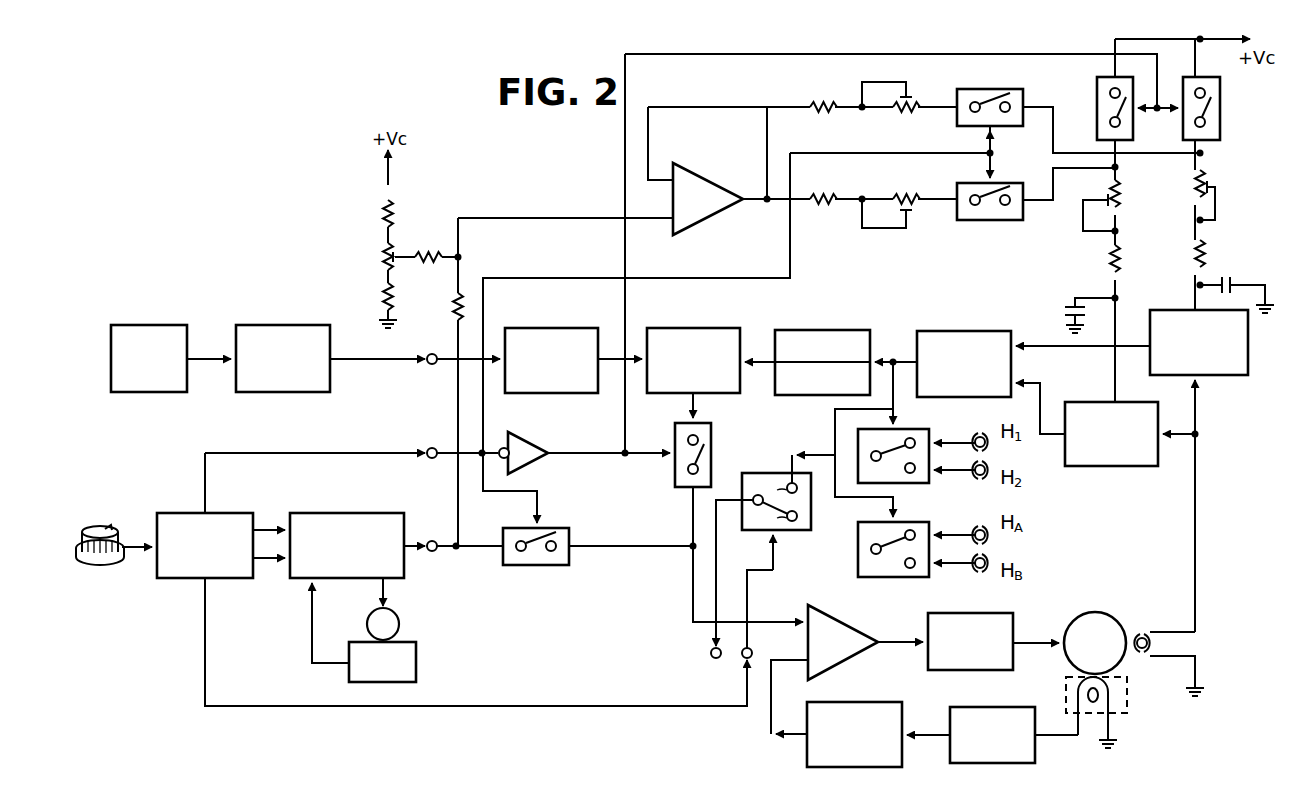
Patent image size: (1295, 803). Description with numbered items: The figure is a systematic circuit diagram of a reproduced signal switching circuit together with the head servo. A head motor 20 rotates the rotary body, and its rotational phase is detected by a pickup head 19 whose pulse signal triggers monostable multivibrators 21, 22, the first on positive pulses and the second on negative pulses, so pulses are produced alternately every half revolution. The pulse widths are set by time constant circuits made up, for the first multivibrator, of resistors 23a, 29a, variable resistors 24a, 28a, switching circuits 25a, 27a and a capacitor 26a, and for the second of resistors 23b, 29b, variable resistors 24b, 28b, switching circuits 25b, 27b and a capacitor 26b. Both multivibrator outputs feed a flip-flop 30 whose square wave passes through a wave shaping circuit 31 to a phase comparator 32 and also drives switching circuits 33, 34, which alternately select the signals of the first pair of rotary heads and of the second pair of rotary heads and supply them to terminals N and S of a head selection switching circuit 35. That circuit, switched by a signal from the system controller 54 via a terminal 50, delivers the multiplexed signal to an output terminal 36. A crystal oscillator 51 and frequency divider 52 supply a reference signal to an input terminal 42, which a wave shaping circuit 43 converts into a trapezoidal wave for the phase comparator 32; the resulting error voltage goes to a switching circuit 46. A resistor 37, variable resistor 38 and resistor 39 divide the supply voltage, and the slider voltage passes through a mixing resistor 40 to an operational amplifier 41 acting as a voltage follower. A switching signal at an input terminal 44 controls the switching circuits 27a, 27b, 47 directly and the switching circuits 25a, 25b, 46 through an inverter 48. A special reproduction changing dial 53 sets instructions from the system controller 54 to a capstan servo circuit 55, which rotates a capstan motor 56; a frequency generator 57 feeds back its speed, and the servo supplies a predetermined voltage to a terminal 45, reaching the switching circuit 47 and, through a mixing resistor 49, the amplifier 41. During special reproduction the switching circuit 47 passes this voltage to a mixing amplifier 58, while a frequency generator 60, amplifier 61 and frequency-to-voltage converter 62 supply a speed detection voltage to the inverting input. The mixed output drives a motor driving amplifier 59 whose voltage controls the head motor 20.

The pickup head 19 is at (1138, 632).
The head motor 20 is at (1095, 612).
The monostable multivibrator 21 is at (1115, 468).
The monostable multivibrator 22 is at (1212, 377).
The resistor 23a is at (1121, 273).
The resistor 23b is at (1190, 255).
The variable resistor 24a is at (1118, 205).
The variable resistor 24b is at (1207, 180).
The switching circuit 25a is at (1097, 100).
The switching circuit 25b is at (1220, 93).
The capacitor 26a is at (1072, 304).
The capacitor 26b is at (1230, 278).
The switching circuit 27a is at (990, 220).
The switching circuit 27b is at (995, 89).
The variable resistor 28a is at (903, 191).
The variable resistor 28b is at (903, 114).
The resistor 29a is at (820, 208).
The resistor 29b is at (822, 100).
The flip-flop 30 is at (957, 331).
The wave shaping circuit 31 is at (818, 330).
The phase comparator 32 is at (688, 328).
The switching circuit 33 is at (910, 430).
The switching circuit 34 is at (858, 530).
The head selection switching circuit 35 is at (768, 473).
The output terminal 36 is at (710, 654).
The resistor 37 is at (380, 210).
The variable resistor 38 is at (380, 257).
The resistor 39 is at (380, 291).
The mixing resistor 40 is at (428, 250).
The operational amplifier 41 is at (705, 167).
The input terminal 42 is at (432, 364).
The wave shaping circuit 43 is at (548, 328).
The input terminal 44 is at (432, 458).
The terminal 45 is at (432, 551).
The switching circuit 46 is at (712, 448).
The switching circuit 47 is at (537, 566).
The inverter 48 is at (533, 442).
The mixing resistor 49 is at (453, 307).
The terminal 50 is at (744, 658).
The crystal oscillator 51 is at (140, 326).
The frequency divider 52 is at (275, 325).
The special reproduction changing dial 53 is at (100, 526).
The system controller 54 is at (178, 512).
The capstan servo circuit 55 is at (342, 512).
The capstan motor 56 is at (400, 620).
The frequency generator 57 is at (418, 661).
The mixing amplifier 58 is at (844, 619).
The motor driving amplifier 59 is at (965, 613).
The frequency generator 60 is at (1127, 690).
The amplifier 61 is at (1010, 707).
The frequency-to-voltage converter 62 is at (815, 702).